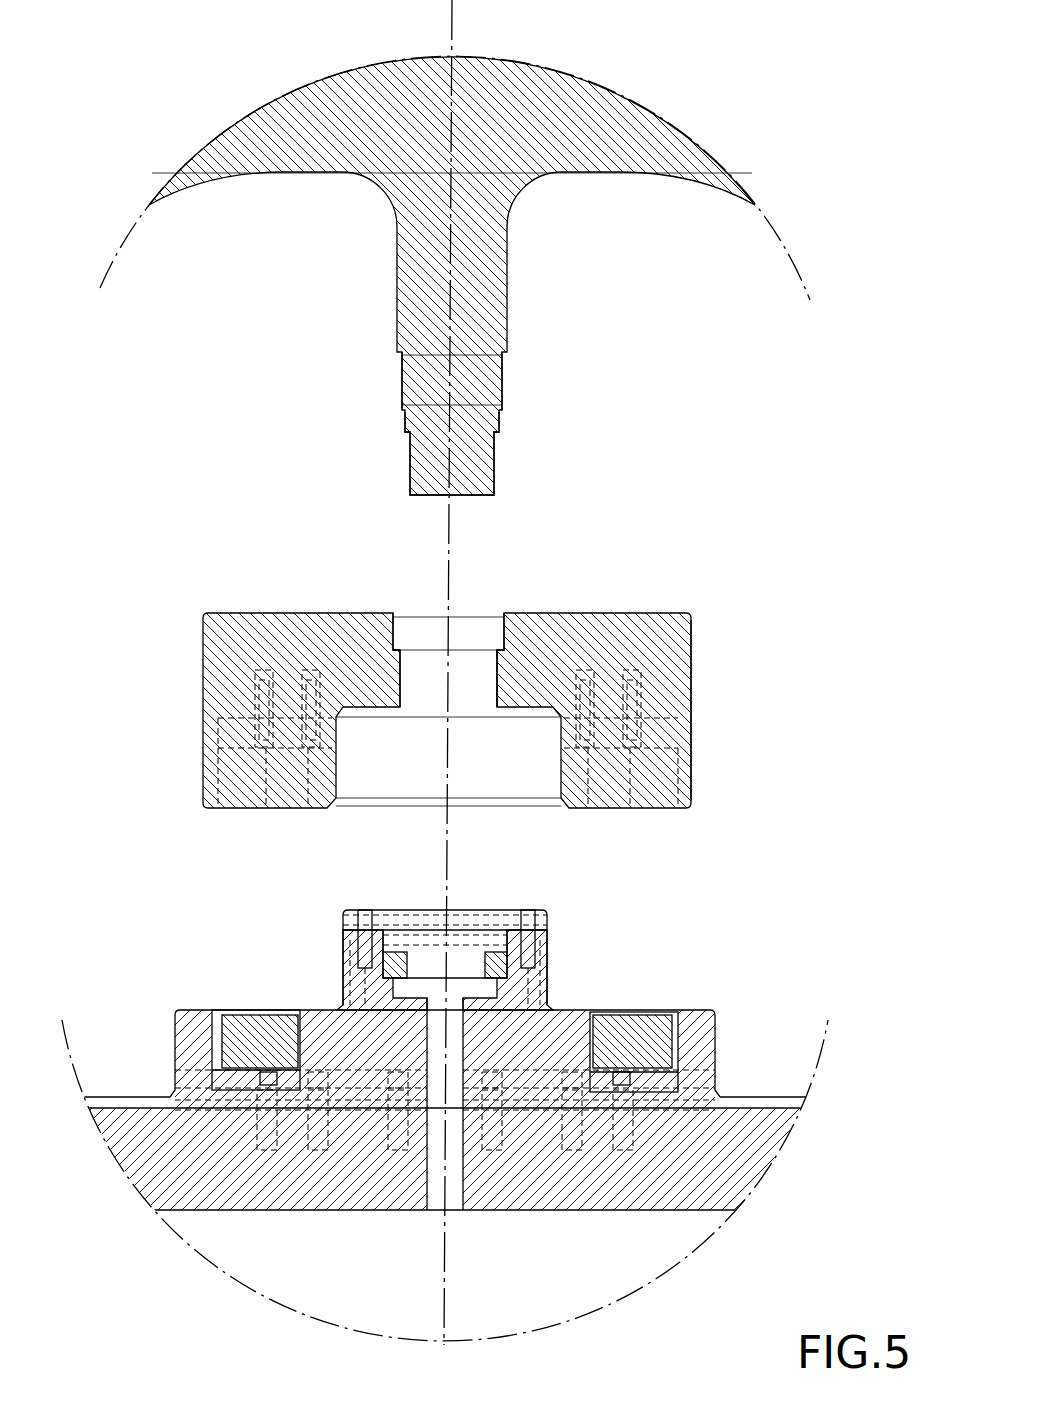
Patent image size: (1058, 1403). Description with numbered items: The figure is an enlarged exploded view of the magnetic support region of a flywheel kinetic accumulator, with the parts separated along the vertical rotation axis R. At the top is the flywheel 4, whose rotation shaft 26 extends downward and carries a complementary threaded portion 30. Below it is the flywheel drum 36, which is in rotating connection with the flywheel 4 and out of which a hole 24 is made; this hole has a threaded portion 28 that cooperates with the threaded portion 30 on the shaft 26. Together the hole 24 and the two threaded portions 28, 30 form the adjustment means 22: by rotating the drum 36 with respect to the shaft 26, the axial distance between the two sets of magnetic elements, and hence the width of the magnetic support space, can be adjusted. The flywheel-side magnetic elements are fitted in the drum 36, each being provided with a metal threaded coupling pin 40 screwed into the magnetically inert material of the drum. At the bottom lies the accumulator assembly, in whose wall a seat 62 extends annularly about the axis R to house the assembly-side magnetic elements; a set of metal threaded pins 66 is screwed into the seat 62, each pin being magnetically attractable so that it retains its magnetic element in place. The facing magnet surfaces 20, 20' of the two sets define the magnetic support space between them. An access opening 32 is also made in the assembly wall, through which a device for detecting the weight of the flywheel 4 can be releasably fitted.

The rotation axis R is at (455, 27).
The flywheel 4 is at (692, 134).
The magnet surface 20 is at (450, 1069).
The magnet surface 20' is at (462, 749).
The adjustment means 22 is at (520, 628).
The hole 24 is at (402, 630).
The rotation shaft 26 is at (397, 424).
The threaded portion 28 is at (483, 622).
The complementary threaded portion 30 is at (500, 425).
The access opening 32 is at (438, 1200).
The flywheel drum 36 is at (699, 629).
The threaded coupling pin 40 is at (250, 672).
The seat 62 is at (330, 1067).
The threaded pin 66 is at (253, 1143).